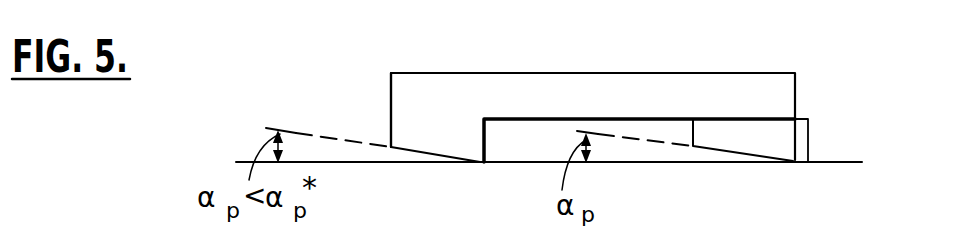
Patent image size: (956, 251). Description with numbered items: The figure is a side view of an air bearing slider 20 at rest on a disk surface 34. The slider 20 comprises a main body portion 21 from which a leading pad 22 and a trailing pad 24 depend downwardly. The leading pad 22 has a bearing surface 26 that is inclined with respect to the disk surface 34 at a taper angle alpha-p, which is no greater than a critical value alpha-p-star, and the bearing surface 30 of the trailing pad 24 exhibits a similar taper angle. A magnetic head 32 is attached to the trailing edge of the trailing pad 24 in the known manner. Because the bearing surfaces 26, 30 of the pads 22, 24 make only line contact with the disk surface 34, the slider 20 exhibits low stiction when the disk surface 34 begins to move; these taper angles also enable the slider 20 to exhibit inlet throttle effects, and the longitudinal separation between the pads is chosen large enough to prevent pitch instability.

The air bearing slider 20 is at (546, 56).
The main body portion 21 is at (633, 90).
The leading pad 22 is at (413, 99).
The trailing pad 24 is at (760, 135).
The bearing surface 26 is at (416, 156).
The bearing surface 30 is at (727, 155).
The magnetic head 32 is at (810, 135).
The disk surface 34 is at (822, 161).